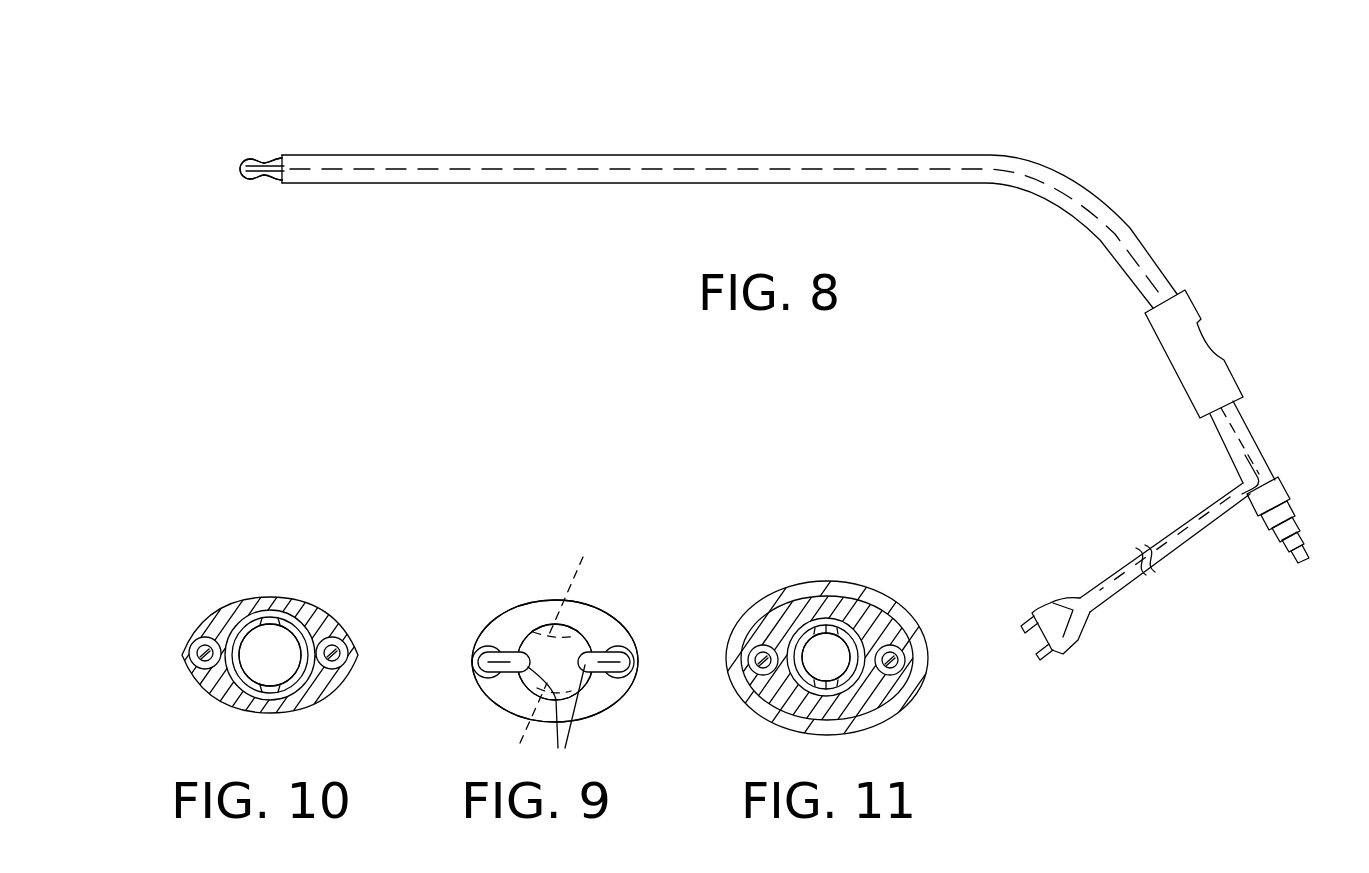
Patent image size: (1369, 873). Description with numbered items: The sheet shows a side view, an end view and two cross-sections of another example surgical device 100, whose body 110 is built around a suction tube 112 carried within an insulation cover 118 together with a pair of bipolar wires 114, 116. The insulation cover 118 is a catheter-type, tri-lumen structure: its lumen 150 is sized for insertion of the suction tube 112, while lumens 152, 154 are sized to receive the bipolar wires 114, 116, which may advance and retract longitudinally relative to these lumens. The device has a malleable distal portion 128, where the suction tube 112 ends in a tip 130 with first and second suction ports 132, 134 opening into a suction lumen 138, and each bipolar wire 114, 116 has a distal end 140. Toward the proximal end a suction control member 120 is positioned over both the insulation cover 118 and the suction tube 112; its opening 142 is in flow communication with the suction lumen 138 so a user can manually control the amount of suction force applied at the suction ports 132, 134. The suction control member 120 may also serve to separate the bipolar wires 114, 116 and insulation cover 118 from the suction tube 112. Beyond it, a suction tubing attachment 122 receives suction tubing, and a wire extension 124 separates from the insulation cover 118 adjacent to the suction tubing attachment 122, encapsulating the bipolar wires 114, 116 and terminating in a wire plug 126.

In FIG. 8, the surgical device 100 is at (1098, 152).
In FIG. 10, the surgical device 100 is at (296, 573).
In FIG. 9, the surgical device 100 is at (664, 572).
In FIG. 11, the surgical device 100 is at (912, 572).
In FIG. 9, the instrument body 110 is at (607, 680).
In FIG. 8, the suction tube 112 is at (272, 183).
In FIG. 10, the suction tube 112 is at (259, 620).
In FIG. 9, the suction tube 112 is at (542, 620).
In FIG. 11, the suction tube 112 is at (800, 630).
In FIG. 8, the bipolar wire 114 is at (1053, 604).
In FIG. 10, the bipolar wire 114 is at (200, 660).
In FIG. 9, the bipolar wire 114 is at (490, 665).
In FIG. 11, the bipolar wire 114 is at (758, 665).
In FIG. 8, the bipolar wire 116 is at (1062, 655).
In FIG. 10, the bipolar wire 116 is at (340, 654).
In FIG. 11, the bipolar wire 116 is at (890, 668).
In FIG. 8, the insulation cover 118 is at (350, 155).
In FIG. 10, the insulation cover 118 is at (234, 606).
In FIG. 9, the insulation cover 118 is at (510, 608).
In FIG. 11, the insulation cover 118 is at (912, 670).
In FIG. 8, the suction control member 120 is at (1240, 390).
In FIG. 11, the suction control member 120 is at (920, 640).
In FIG. 8, the suction tubing attachment 122 is at (1288, 486).
In FIG. 8, the wire extension 124 is at (1183, 527).
In FIG. 8, the wire plug 126 is at (1078, 641).
In FIG. 8, the malleable distal portion 128 is at (419, 88).
In FIG. 8, the tip 130 is at (242, 178).
In FIG. 9, the tip 130 is at (560, 648).
In FIG. 8, the first suction port 132 is at (262, 156).
In FIG. 9, the first suction port 132 is at (570, 585).
In FIG. 8, the second suction port 134 is at (263, 181).
In FIG. 9, the second suction port 134 is at (534, 726).
In FIG. 10, the suction lumen 138 is at (270, 668).
In FIG. 8, the distal end 140 is at (245, 156).
In FIG. 9, the distal end 140 is at (556, 720).
In FIG. 8, the opening 142 is at (1205, 331).
In FIG. 11, the opening 142 is at (823, 590).
In FIG. 10, the lumen 150 is at (290, 617).
In FIG. 10, the lumen 152 is at (200, 630).
In FIG. 9, the lumen 152 is at (490, 645).
In FIG. 11, the lumen 152 is at (755, 645).
In FIG. 10, the lumen 154 is at (342, 632).
In FIG. 9, the lumen 154 is at (622, 648).
In FIG. 11, the lumen 154 is at (895, 645).